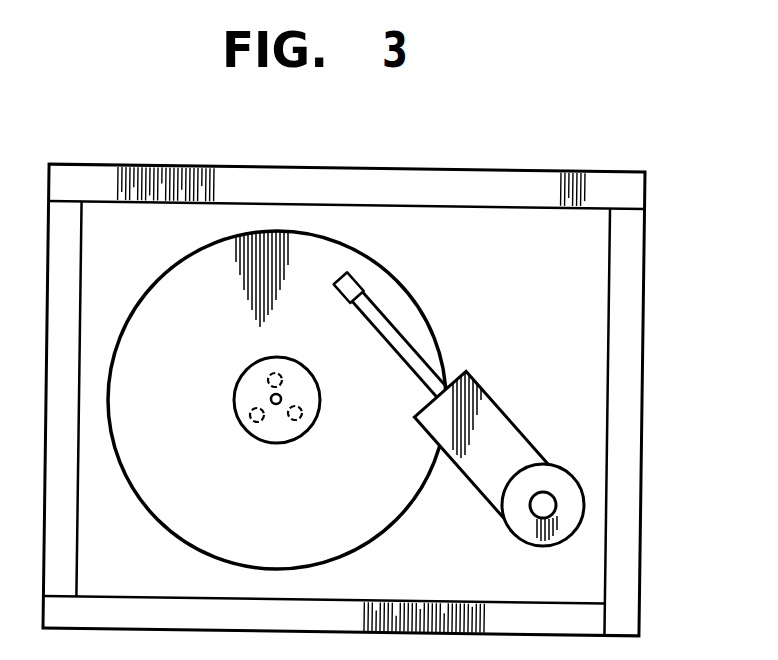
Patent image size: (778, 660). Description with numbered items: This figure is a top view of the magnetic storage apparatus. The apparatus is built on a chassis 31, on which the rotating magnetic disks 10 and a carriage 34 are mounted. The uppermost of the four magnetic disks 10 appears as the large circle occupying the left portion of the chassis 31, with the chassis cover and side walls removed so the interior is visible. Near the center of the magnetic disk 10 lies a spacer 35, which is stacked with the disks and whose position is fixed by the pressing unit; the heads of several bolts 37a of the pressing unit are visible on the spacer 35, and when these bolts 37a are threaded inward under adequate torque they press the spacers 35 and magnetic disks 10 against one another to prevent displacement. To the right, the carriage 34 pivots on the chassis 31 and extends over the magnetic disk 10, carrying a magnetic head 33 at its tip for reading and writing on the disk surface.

The magnetic disk 10 is at (200, 258).
The chassis 31 is at (633, 285).
The magnetic head 33 is at (353, 282).
The carriage 34 is at (560, 487).
The spacer 35 is at (276, 432).
The bolt 37a is at (240, 421).